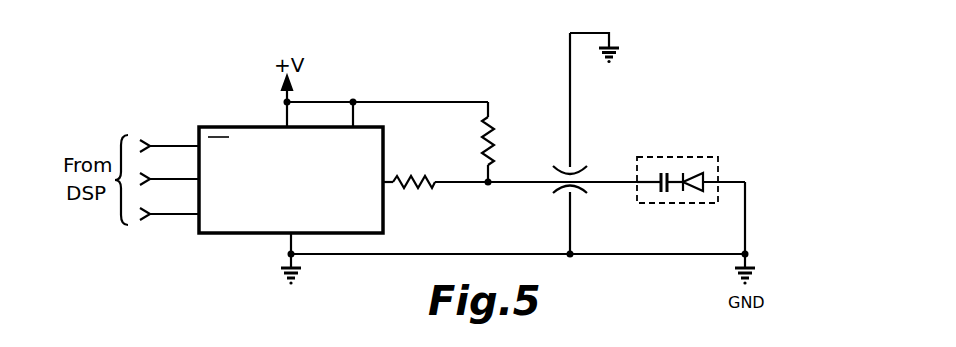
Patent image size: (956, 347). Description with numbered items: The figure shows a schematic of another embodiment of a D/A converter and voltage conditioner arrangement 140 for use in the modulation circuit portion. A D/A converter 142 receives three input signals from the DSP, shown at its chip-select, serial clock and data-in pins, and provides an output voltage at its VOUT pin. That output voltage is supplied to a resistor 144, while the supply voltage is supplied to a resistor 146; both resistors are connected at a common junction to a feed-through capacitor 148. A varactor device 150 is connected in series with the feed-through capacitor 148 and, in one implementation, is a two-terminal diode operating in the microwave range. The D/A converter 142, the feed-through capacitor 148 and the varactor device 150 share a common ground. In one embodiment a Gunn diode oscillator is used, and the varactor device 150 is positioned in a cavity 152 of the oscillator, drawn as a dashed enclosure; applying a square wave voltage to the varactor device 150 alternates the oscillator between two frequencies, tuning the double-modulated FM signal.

The D/A converter and voltage conditioner arrangement 140 is at (665, 52).
The D/A converter 142 is at (231, 127).
The resistor 144 is at (408, 174).
The resistor 146 is at (489, 139).
The feed-through capacitor 148 is at (589, 176).
The varactor device 150 is at (682, 160).
The cavity 152 is at (721, 162).